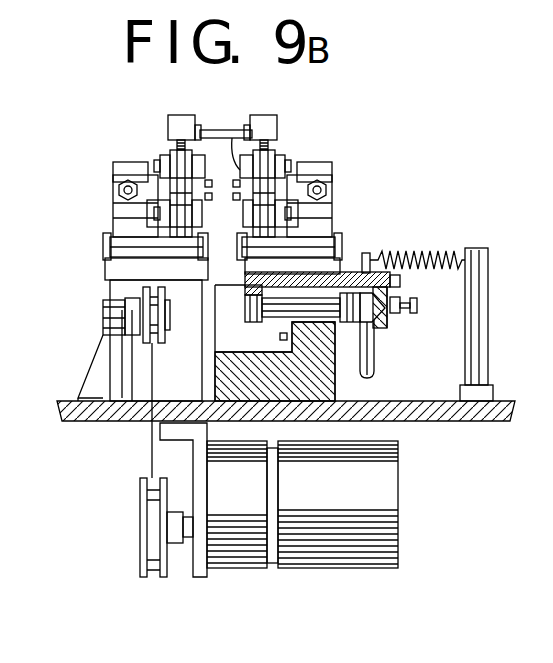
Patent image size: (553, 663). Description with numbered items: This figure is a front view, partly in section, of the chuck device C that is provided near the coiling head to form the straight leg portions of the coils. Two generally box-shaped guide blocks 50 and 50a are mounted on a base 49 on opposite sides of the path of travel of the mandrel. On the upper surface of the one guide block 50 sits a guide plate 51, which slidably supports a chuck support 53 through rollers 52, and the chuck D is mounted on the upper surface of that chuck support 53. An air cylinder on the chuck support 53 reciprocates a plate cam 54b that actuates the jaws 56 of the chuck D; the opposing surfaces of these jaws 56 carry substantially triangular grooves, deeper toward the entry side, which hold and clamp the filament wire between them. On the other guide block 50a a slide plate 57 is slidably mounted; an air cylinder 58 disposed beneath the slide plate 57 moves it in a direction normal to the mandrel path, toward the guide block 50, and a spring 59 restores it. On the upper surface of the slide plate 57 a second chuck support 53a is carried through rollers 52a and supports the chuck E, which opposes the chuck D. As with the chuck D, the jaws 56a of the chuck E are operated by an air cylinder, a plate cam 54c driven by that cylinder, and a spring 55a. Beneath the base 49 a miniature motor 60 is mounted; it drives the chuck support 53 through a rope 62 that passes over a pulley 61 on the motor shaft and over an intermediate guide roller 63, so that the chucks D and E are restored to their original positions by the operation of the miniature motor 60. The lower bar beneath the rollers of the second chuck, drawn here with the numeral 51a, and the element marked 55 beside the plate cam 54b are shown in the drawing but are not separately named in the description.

The chuck device C is at (104, 122).
The chuck D is at (165, 122).
The chuck E is at (262, 118).
The base 49 is at (452, 410).
The guide block 50 is at (190, 389).
The guide block 50a is at (330, 393).
The guide plate 51 is at (122, 267).
The pedestal 51a is at (332, 264).
The rollers 52 is at (127, 243).
The rollers 52a is at (322, 234).
The chuck support 53 is at (117, 168).
The chuck support 53a is at (323, 168).
The plate cam 54b is at (178, 158).
The plate cam 54c is at (278, 158).
The slide 55 is at (168, 141).
The spring 55a is at (276, 143).
The jaws 56 is at (205, 202).
The jaws 56a is at (226, 138).
The slide plate 57 is at (255, 286).
The air cylinder 58 is at (280, 337).
The spring 59 is at (427, 312).
The miniature motor 60 is at (395, 558).
The pulley 61 is at (152, 575).
The rope 62 is at (155, 460).
The guide roller 63 is at (160, 337).